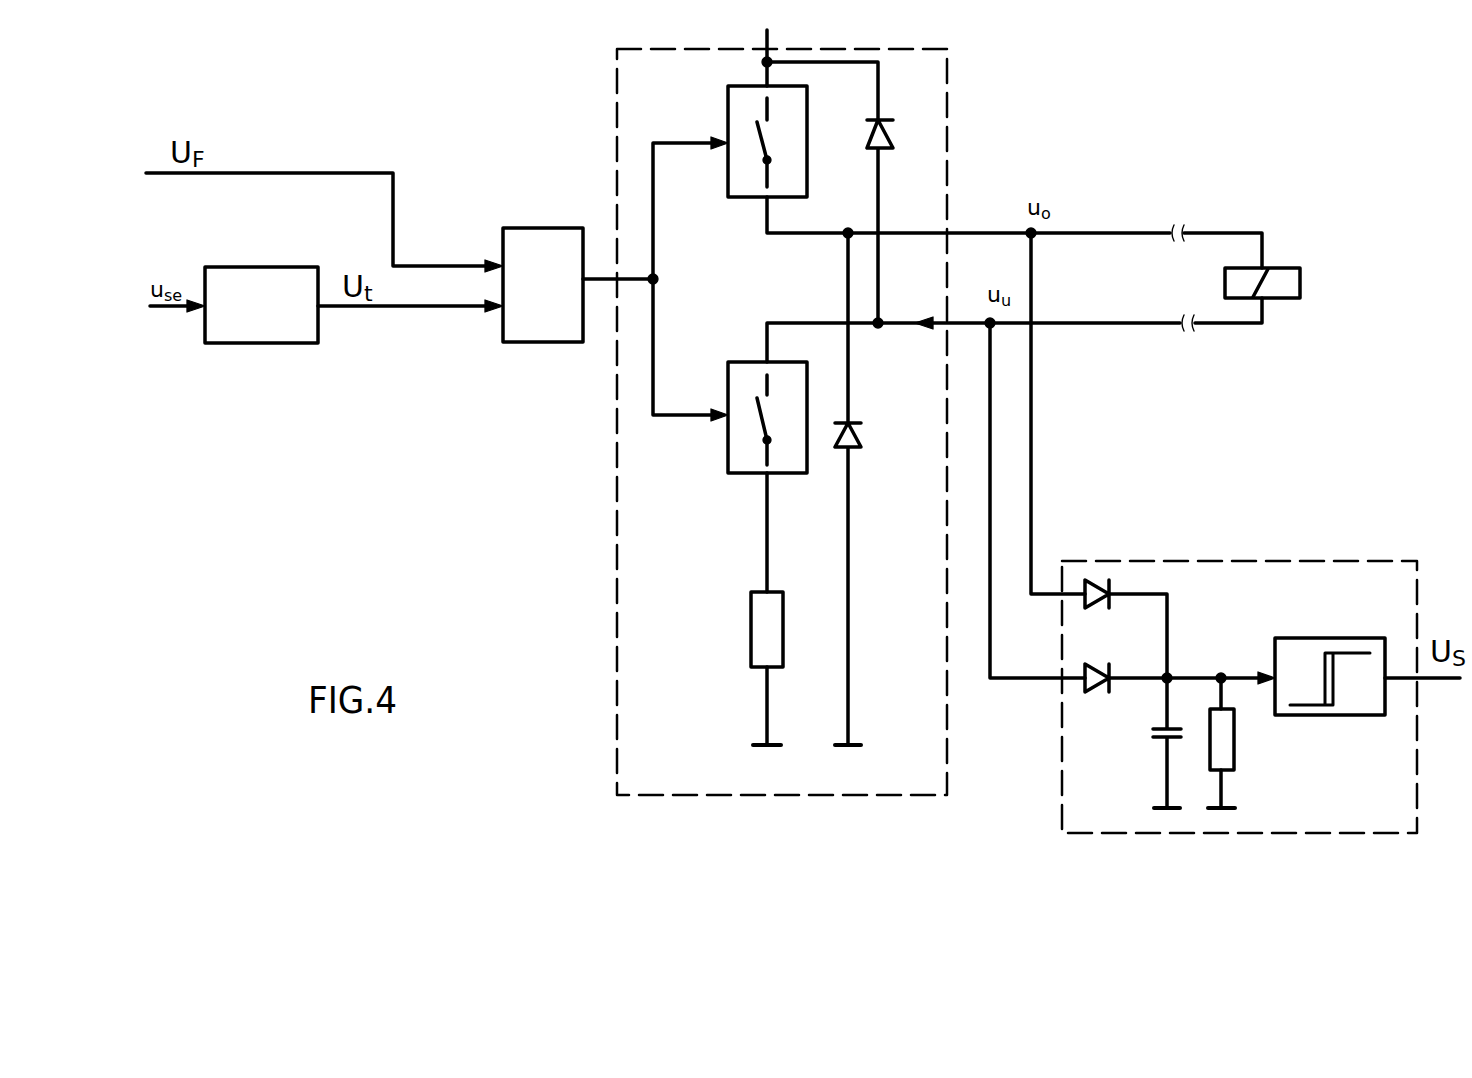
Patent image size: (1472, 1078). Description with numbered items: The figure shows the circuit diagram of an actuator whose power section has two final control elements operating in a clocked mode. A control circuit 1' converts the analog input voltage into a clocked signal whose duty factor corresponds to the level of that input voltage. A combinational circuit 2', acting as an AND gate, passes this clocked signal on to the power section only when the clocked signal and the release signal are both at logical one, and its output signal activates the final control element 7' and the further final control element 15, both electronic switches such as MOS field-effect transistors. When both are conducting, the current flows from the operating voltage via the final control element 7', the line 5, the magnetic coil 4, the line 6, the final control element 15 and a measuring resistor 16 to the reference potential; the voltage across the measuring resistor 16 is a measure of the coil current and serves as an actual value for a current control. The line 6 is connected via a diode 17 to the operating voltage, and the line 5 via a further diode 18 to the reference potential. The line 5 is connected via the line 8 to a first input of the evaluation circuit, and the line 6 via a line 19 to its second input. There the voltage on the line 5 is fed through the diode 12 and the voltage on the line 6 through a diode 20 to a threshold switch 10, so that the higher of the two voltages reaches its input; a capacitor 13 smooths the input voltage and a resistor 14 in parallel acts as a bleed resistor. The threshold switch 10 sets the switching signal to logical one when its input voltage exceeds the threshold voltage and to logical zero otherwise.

The control circuit 1' is at (261, 350).
The combinational circuit 2' is at (543, 330).
The magnetic coil 4 is at (1295, 268).
The line 5 is at (1132, 232).
The line 6 is at (1119, 321).
The final control element 7' is at (795, 141).
The line 8 is at (1035, 415).
The threshold switch 10 is at (1330, 715).
The diode 12 is at (1086, 584).
The capacitor 13 is at (1163, 738).
The resistor 14 is at (1235, 745).
The further final control element 15 is at (807, 415).
The measuring resistor 16 is at (751, 630).
The diode 17 is at (885, 150).
The further diode 18 is at (858, 450).
The line 19 is at (1012, 680).
The diode 20 is at (1080, 690).